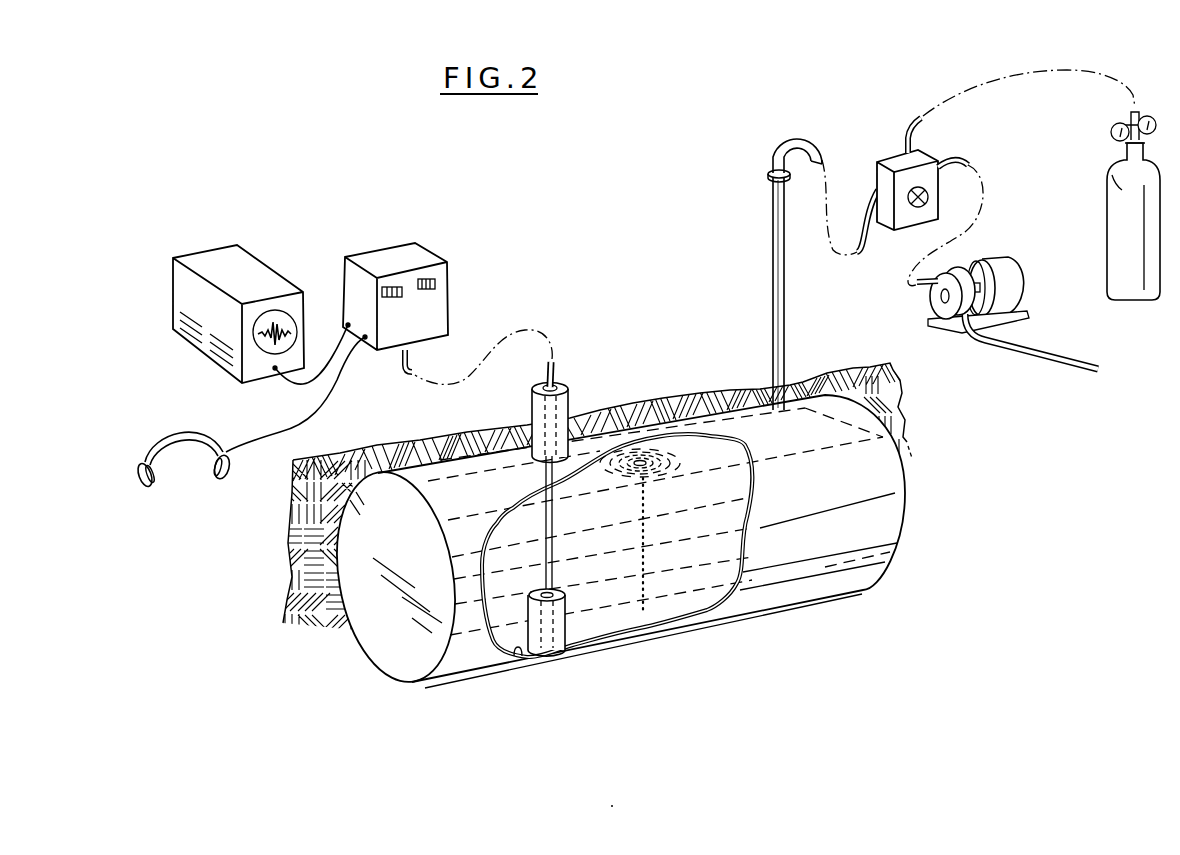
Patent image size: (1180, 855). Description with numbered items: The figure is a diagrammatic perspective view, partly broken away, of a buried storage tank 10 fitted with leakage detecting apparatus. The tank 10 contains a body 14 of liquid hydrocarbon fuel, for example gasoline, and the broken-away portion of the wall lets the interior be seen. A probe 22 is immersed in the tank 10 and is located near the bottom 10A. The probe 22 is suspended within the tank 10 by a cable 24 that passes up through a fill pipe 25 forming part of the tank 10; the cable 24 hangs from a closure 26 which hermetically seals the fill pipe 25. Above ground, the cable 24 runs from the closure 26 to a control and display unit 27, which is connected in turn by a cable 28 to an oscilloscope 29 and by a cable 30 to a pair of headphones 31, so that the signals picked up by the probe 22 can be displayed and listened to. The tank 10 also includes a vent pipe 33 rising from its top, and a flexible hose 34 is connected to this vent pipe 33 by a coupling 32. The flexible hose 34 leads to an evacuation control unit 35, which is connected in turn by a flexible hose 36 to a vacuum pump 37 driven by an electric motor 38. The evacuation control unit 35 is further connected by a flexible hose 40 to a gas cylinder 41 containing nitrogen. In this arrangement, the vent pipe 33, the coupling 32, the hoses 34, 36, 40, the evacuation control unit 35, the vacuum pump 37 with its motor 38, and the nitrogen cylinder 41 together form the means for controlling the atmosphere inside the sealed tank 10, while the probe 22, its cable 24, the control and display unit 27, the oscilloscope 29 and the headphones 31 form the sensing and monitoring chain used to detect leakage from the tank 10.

The tank 10 is at (879, 483).
The bottom of the tank 10A is at (521, 656).
The body of liquid hydrocarbon fuel 14 is at (723, 502).
The probe 22 is at (552, 633).
The cable 24 is at (546, 530).
The fill pipe 25 is at (535, 412).
The closure 26 is at (543, 380).
The control and display unit 27 is at (370, 258).
The cable 28 is at (303, 386).
The oscilloscope 29 is at (225, 266).
The cable 30 is at (253, 437).
The headphones 31 is at (165, 433).
The coupling 32 is at (768, 173).
The vent pipe 33 is at (777, 265).
The flexible hose 34 is at (812, 137).
The evacuation control unit 35 is at (890, 158).
The flexible hose 36 is at (967, 160).
The vacuum pump 37 is at (930, 308).
The electric motor 38 is at (1000, 262).
The flexible hose 40 is at (917, 120).
The gas cylinder 41 is at (1117, 168).